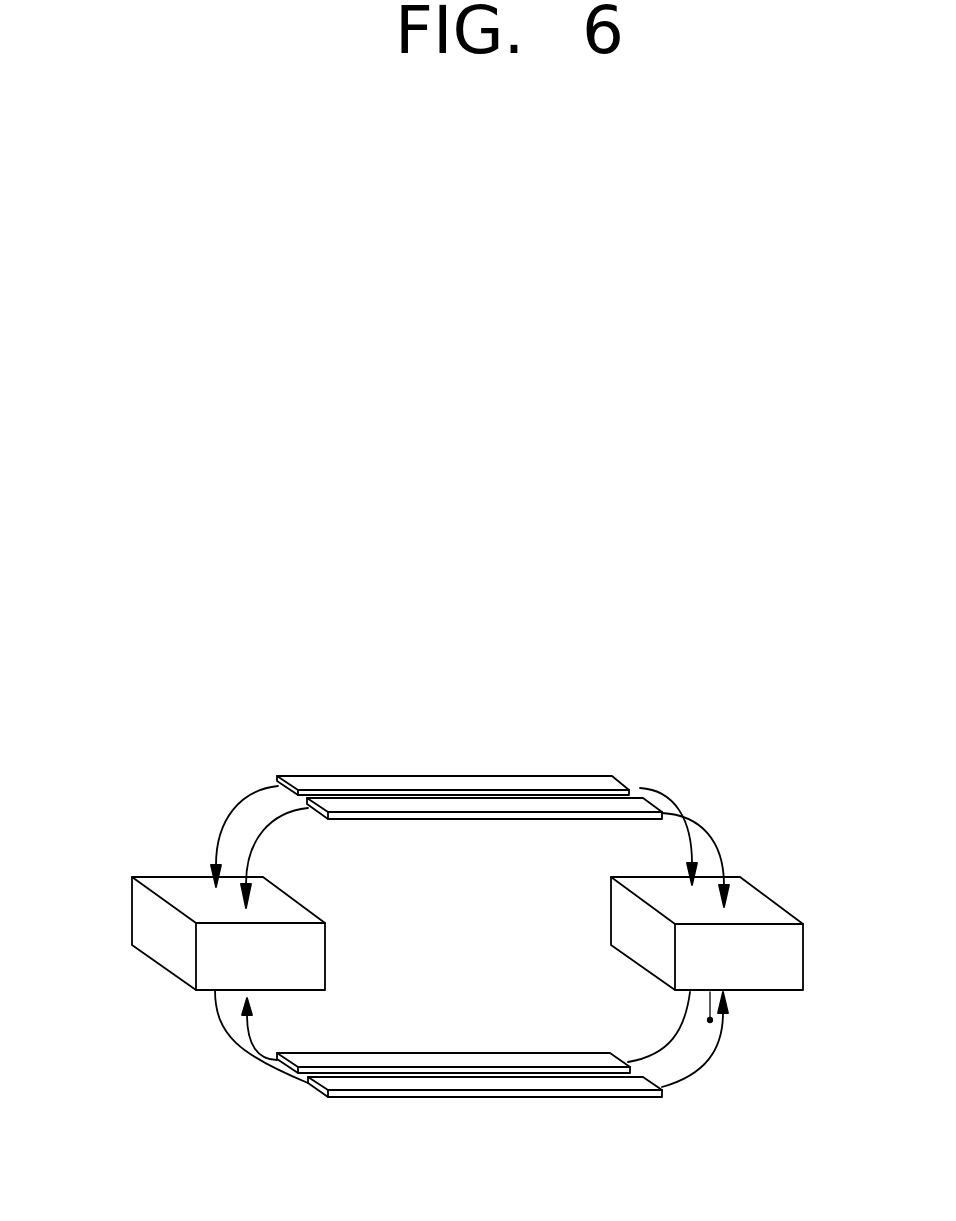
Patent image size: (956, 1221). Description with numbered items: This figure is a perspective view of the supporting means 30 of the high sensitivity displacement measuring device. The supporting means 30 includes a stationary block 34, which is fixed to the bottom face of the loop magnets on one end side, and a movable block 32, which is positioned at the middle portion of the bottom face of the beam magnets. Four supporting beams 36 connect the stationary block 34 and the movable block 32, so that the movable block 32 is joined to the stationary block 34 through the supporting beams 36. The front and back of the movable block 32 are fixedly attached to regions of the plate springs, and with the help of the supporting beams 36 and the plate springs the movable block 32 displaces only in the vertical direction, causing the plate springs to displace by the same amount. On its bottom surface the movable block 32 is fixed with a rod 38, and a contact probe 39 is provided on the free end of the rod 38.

The supporting means 30 is at (702, 683).
The movable block 32 is at (778, 962).
The stationary block 34 is at (147, 917).
The supporting beam 36 is at (390, 787).
The rod 38 is at (710, 1005).
The contact probe 39 is at (710, 1020).